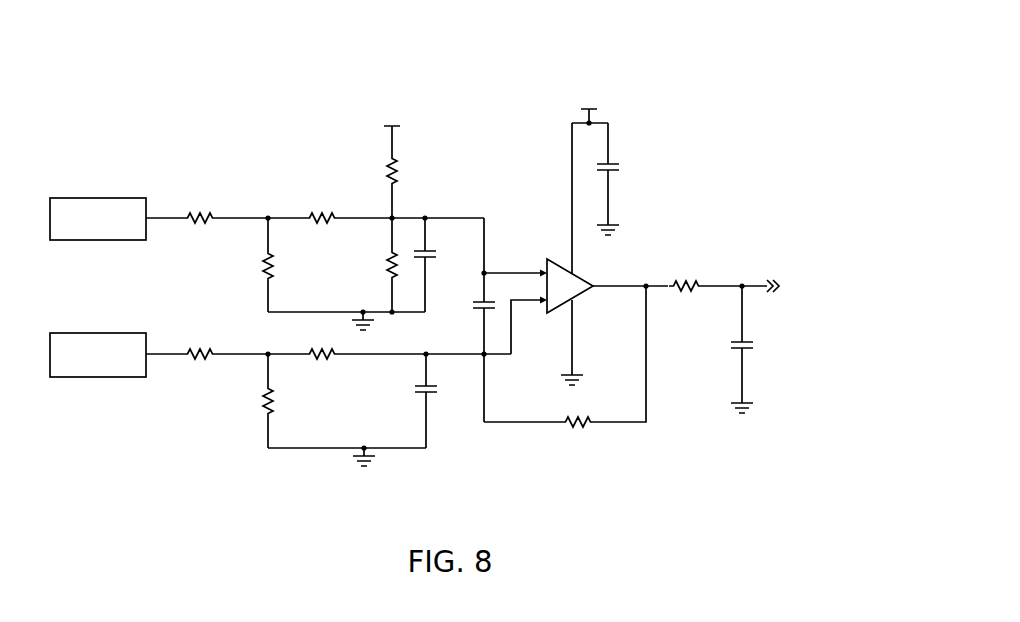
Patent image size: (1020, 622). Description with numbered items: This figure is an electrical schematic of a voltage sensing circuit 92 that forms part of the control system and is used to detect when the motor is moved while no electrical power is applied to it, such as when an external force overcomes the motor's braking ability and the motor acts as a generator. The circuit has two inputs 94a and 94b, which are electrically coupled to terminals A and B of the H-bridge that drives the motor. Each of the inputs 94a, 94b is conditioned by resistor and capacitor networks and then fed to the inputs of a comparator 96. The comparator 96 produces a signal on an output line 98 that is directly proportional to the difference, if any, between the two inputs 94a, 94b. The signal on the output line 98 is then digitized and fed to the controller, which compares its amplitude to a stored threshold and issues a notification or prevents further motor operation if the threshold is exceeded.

The voltage sensing circuit 92 is at (503, 78).
The input 94a is at (163, 217).
The input 94b is at (161, 357).
The comparator 96 is at (565, 263).
The output line 98 is at (718, 284).